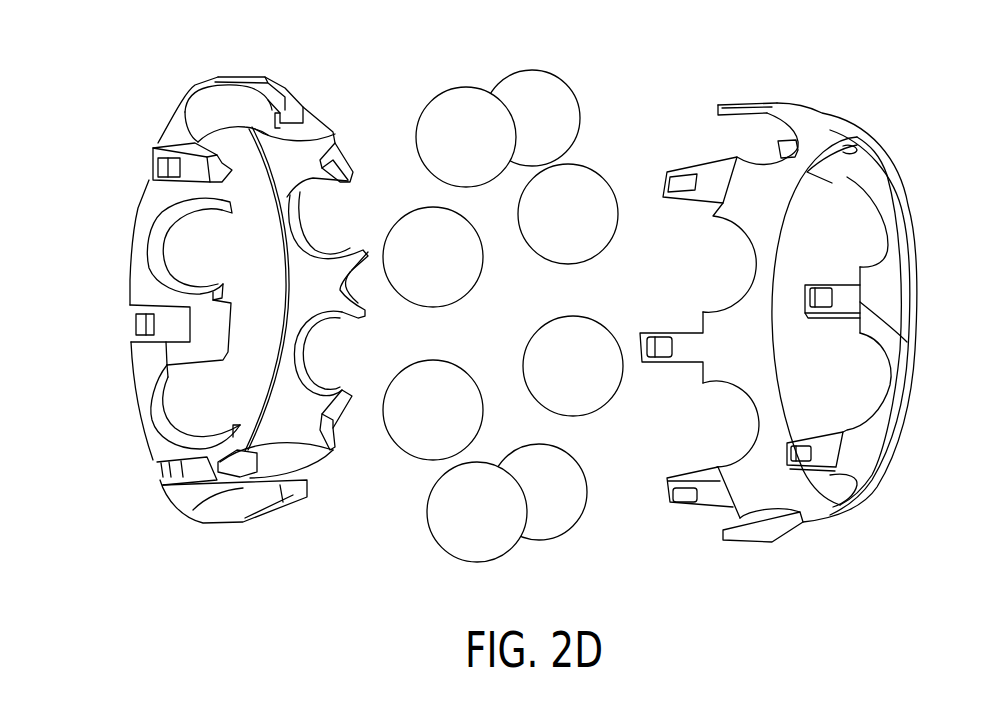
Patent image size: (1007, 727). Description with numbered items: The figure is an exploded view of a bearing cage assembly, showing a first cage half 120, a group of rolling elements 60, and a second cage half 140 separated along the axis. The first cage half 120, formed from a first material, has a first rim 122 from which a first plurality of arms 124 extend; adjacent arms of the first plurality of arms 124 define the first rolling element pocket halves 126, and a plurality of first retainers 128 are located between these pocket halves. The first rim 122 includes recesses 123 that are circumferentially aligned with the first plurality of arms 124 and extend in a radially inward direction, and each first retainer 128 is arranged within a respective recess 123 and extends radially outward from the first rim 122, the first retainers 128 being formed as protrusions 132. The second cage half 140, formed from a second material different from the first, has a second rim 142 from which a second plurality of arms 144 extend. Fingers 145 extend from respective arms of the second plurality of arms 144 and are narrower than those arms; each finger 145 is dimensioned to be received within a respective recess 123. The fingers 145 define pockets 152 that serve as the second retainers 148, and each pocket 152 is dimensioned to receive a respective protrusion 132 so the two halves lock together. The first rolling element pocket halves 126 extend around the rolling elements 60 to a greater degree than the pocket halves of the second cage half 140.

The rolling elements 60 is at (552, 90).
The first cage half 120 is at (170, 112).
The first rim 122 is at (138, 204).
The recesses 123 is at (160, 148).
The first plurality of arms 124 is at (173, 295).
The first rolling element pocket halves 126 is at (163, 417).
The first retainers 128 is at (137, 327).
The protrusions 132 is at (163, 163).
The second cage half 140 is at (820, 110).
The second rim 142 is at (915, 302).
The second plurality of arms 144 is at (862, 303).
The fingers 145 is at (840, 300).
The second retainers 148 is at (817, 313).
The pockets 152 is at (822, 290).